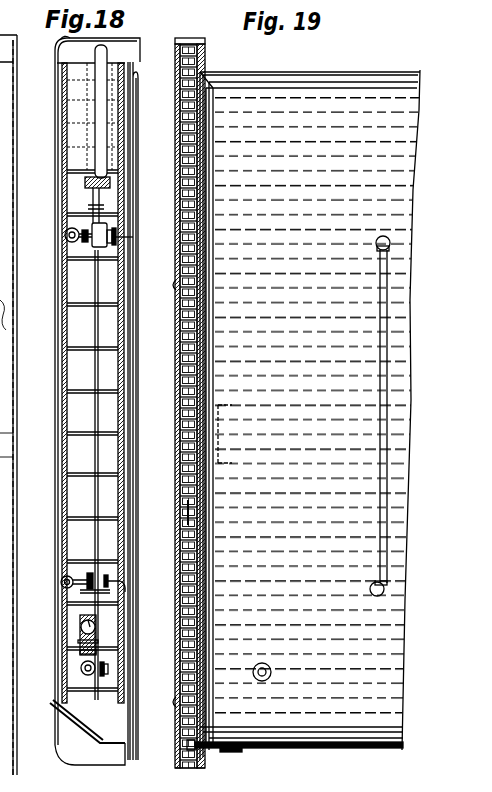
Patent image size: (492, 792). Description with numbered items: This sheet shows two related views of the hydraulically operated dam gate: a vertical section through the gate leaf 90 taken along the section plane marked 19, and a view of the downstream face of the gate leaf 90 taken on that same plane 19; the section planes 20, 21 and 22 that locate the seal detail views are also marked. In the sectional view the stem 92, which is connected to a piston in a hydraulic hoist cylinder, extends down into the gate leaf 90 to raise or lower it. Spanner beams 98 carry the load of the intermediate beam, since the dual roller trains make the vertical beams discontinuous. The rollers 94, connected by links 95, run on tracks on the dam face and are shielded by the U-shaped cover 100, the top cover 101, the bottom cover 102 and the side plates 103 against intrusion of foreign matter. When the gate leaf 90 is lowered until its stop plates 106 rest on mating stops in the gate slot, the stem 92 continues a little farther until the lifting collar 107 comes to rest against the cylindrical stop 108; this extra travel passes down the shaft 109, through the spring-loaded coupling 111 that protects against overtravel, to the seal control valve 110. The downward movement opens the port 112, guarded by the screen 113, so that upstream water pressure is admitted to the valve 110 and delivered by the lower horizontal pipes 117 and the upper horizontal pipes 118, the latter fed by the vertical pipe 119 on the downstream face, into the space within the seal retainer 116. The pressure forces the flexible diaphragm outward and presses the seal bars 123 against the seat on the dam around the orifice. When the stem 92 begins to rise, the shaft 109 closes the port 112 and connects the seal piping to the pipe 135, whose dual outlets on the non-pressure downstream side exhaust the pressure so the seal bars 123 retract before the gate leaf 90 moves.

In FIG. 18, the plane 19— 19 is at (128, 32).
In FIG. 18, the plane 20— 20 is at (157, 243).
In FIG. 19, the plane 20— 20 is at (232, 237).
In FIG. 19, the plane 21— 21 is at (362, 111).
In FIG. 19, the plane 22— 22 is at (349, 769).
In FIG. 18, the gate leaf 90 is at (77, 392).
In FIG. 19, the gate leaf 90 is at (320, 226).
In FIG. 18, the stem 92 is at (95, 57).
In FIG. 19, the rollers 94 is at (186, 160).
In FIG. 19, the links 95 is at (176, 287).
In FIG. 18, the spanner beams 98 is at (9, 412).
In FIG. 18, the U-shaped cover 100 is at (50, 297).
In FIG. 18, the top cover 101 is at (60, 40).
In FIG. 18, the bottom cover 102 is at (62, 772).
In FIG. 19, the side plates 103 is at (182, 513).
In FIG. 19, the stop plates 106 is at (237, 752).
In FIG. 18, the lifting collar 107 is at (85, 182).
In FIG. 18, the cylindrical stop 108 is at (93, 201).
In FIG. 18, the shaft 109 is at (90, 327).
In FIG. 18, the seal control valve 110 is at (82, 625).
In FIG. 18, the spring-loaded coupling 111 is at (92, 228).
In FIG. 18, the port 112 is at (82, 638).
In FIG. 18, the screen 113 is at (0, 596).
In FIG. 19, the seal retainer 116 is at (212, 122).
In FIG. 18, the lower horizontal pipes 117 is at (61, 580).
In FIG. 18, the upper horizontal pipes 118 is at (90, 250).
In FIG. 18, the vertical pipe 119 is at (125, 388).
In FIG. 19, the vertical pipe 119 is at (375, 374).
In FIG. 19, the seal bars 123 is at (277, 102).
In FIG. 18, the pipe 135 is at (81, 670).
In FIG. 19, the pipe 135 is at (253, 671).